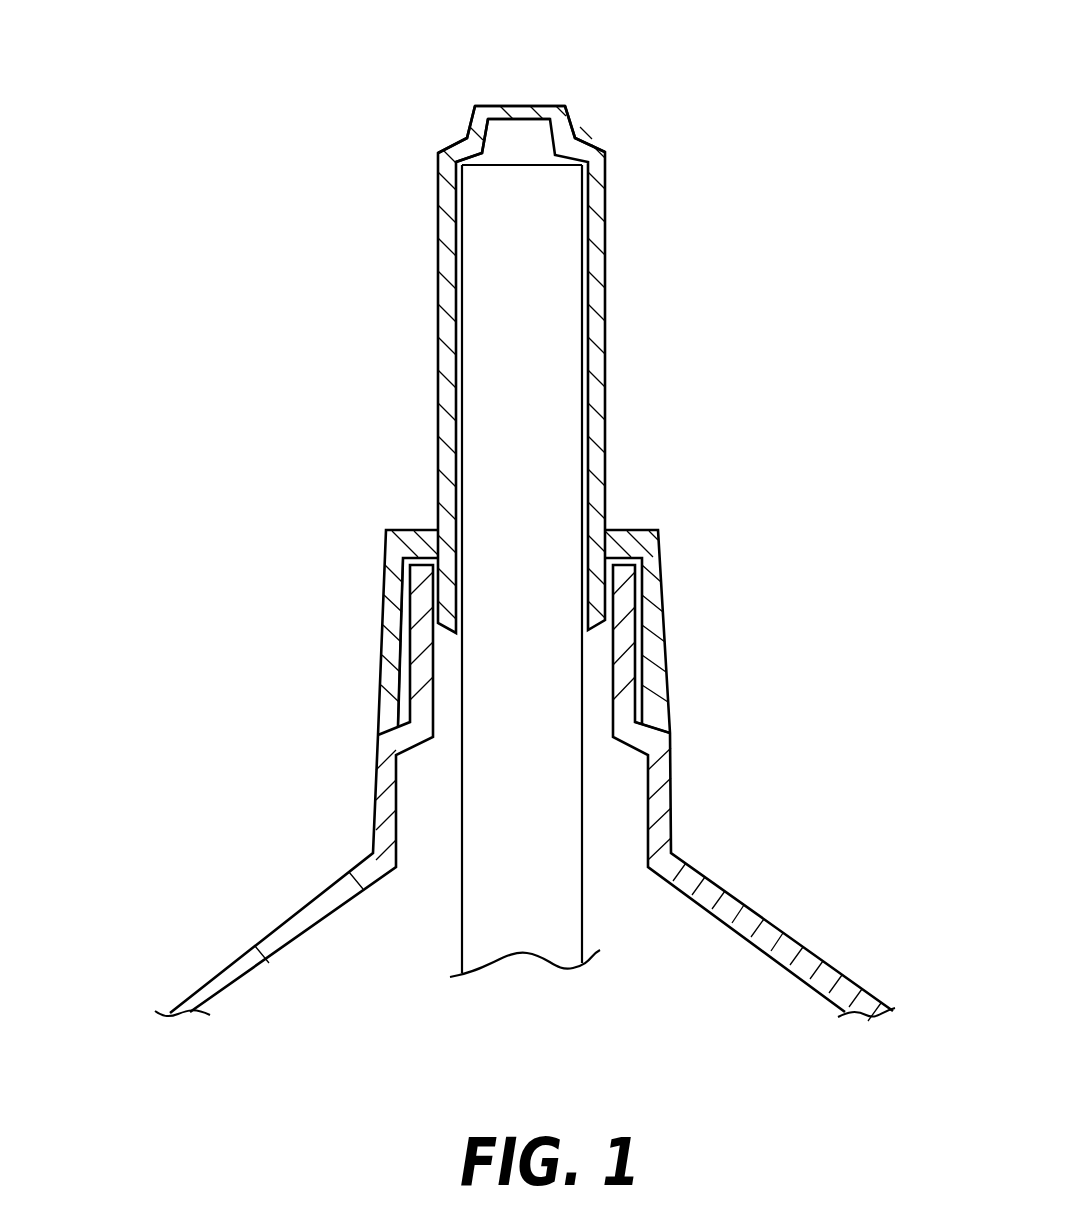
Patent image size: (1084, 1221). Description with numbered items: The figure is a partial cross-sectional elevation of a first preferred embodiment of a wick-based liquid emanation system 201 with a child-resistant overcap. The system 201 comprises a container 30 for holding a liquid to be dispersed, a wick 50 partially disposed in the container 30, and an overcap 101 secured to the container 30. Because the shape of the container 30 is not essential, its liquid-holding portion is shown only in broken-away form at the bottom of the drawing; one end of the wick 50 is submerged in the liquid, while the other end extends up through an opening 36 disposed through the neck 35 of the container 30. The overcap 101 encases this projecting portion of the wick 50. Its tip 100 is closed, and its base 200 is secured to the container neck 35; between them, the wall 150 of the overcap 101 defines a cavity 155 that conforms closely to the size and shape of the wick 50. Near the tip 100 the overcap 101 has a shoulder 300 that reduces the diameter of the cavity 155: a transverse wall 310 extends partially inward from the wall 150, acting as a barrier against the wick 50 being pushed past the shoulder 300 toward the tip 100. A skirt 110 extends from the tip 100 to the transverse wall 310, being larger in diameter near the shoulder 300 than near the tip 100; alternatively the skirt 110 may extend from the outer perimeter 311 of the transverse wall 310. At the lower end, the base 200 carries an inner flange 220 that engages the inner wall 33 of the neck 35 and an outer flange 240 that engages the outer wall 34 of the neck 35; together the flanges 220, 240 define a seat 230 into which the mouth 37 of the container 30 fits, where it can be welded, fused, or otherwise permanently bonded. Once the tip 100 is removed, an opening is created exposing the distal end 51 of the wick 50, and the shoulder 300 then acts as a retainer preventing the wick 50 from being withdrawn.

The container 30 is at (837, 972).
The inner wall 33 is at (615, 680).
The outer wall 34 is at (645, 714).
The neck 35 is at (423, 708).
The opening 36 is at (593, 713).
The mouth 37 is at (432, 566).
The wick 50 is at (552, 932).
The distal end 51 is at (498, 165).
The tip 100 is at (530, 107).
The overcap 101 is at (622, 300).
The skirt 110 is at (562, 120).
The wall 150 is at (437, 347).
The cavity 155 is at (583, 359).
The base 200 is at (606, 528).
The wick-based liquid emanation system 201 is at (228, 692).
The inner flange 220 is at (598, 592).
The seat 230 is at (423, 557).
The outer flange 240 is at (655, 652).
The shoulder 300 is at (593, 153).
The transverse wall 310 is at (450, 143).
The outer perimeter 311 is at (443, 150).